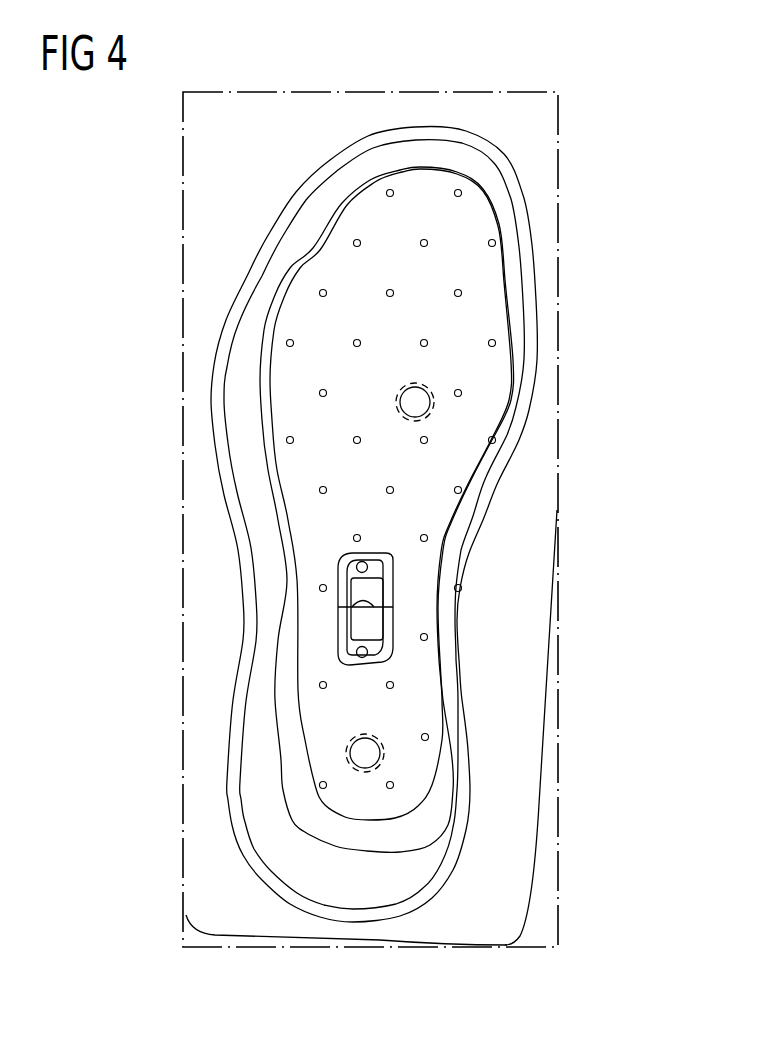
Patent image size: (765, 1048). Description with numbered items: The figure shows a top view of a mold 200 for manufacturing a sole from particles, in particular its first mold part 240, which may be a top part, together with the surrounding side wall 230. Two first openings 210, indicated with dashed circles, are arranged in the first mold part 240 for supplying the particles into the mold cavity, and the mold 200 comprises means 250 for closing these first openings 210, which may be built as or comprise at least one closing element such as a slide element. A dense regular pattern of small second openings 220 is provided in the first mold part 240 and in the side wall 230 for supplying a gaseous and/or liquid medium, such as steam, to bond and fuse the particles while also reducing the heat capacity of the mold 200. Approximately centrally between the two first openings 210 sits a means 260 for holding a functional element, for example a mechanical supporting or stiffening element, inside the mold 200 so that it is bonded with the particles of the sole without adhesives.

The mold 200 is at (236, 178).
The first opening 210 is at (433, 400).
The second openings 220 is at (323, 293).
The side wall 230 is at (524, 325).
The first mold part 240 is at (455, 227).
The means for closing the two first openings 250 is at (424, 413).
The means for holding a functional element 260 is at (363, 620).